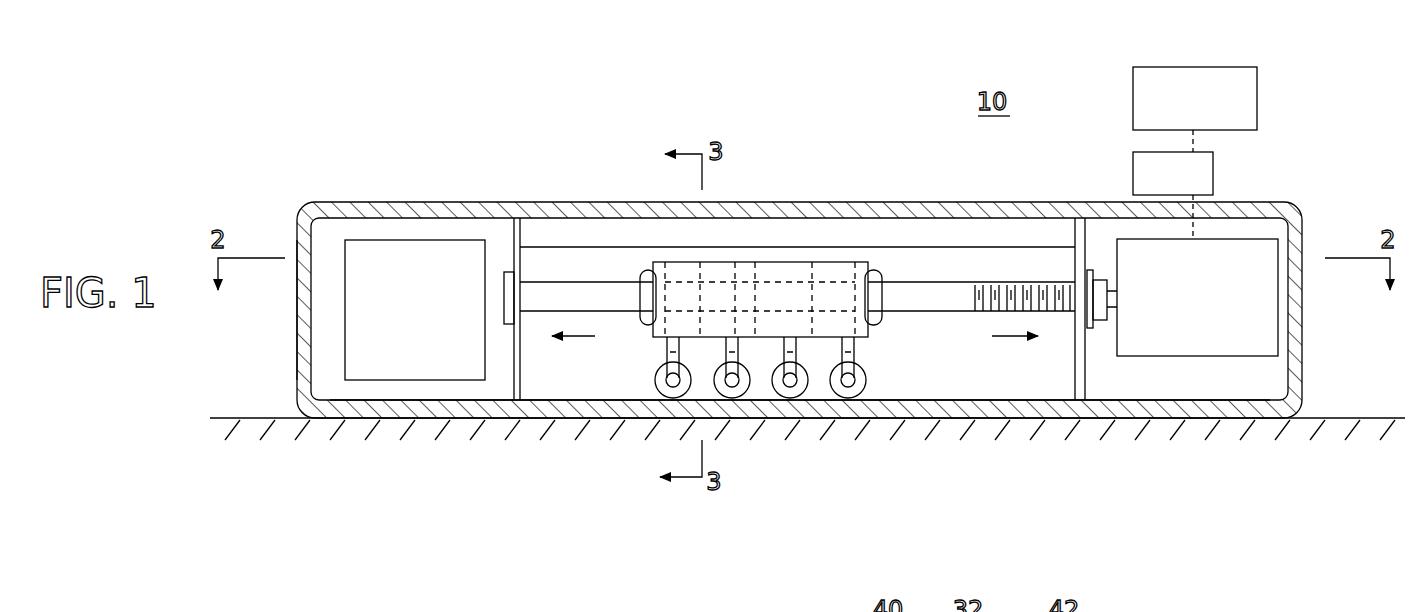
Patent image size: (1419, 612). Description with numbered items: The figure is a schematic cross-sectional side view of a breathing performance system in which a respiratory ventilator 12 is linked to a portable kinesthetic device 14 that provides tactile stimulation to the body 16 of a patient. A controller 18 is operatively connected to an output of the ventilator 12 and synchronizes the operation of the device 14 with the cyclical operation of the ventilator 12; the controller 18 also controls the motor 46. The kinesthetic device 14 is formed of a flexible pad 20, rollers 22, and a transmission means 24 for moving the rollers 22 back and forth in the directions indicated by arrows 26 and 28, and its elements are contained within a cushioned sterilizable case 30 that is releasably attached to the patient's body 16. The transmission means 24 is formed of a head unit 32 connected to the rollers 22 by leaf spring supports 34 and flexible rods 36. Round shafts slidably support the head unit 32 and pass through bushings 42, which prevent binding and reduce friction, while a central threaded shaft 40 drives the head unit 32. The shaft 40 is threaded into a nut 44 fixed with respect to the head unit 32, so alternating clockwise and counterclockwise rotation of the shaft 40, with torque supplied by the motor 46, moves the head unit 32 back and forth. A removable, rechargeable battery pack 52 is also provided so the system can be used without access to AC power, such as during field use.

The respiratory ventilator 12 is at (1212, 111).
The portable kinesthetic device 14 is at (410, 190).
The body of a patient 16 is at (1330, 418).
The controller 18 is at (1213, 172).
The flexible pad 20 is at (1007, 420).
The rollers 22 is at (730, 398).
The transmission means 24 is at (1002, 279).
The arrow 26 is at (575, 343).
The arrow 28 is at (1018, 343).
The cushioned sterilizable case 30 is at (296, 320).
The head unit 32 is at (838, 262).
The leaf spring supports 34 is at (703, 330).
The flexible rods 36 is at (668, 378).
The central threaded shaft 40 is at (563, 282).
The bushings 42 is at (648, 272).
The nut 44 is at (762, 285).
The motor 46 is at (1178, 309).
The removable/rechargeable battery pack 52 is at (396, 318).